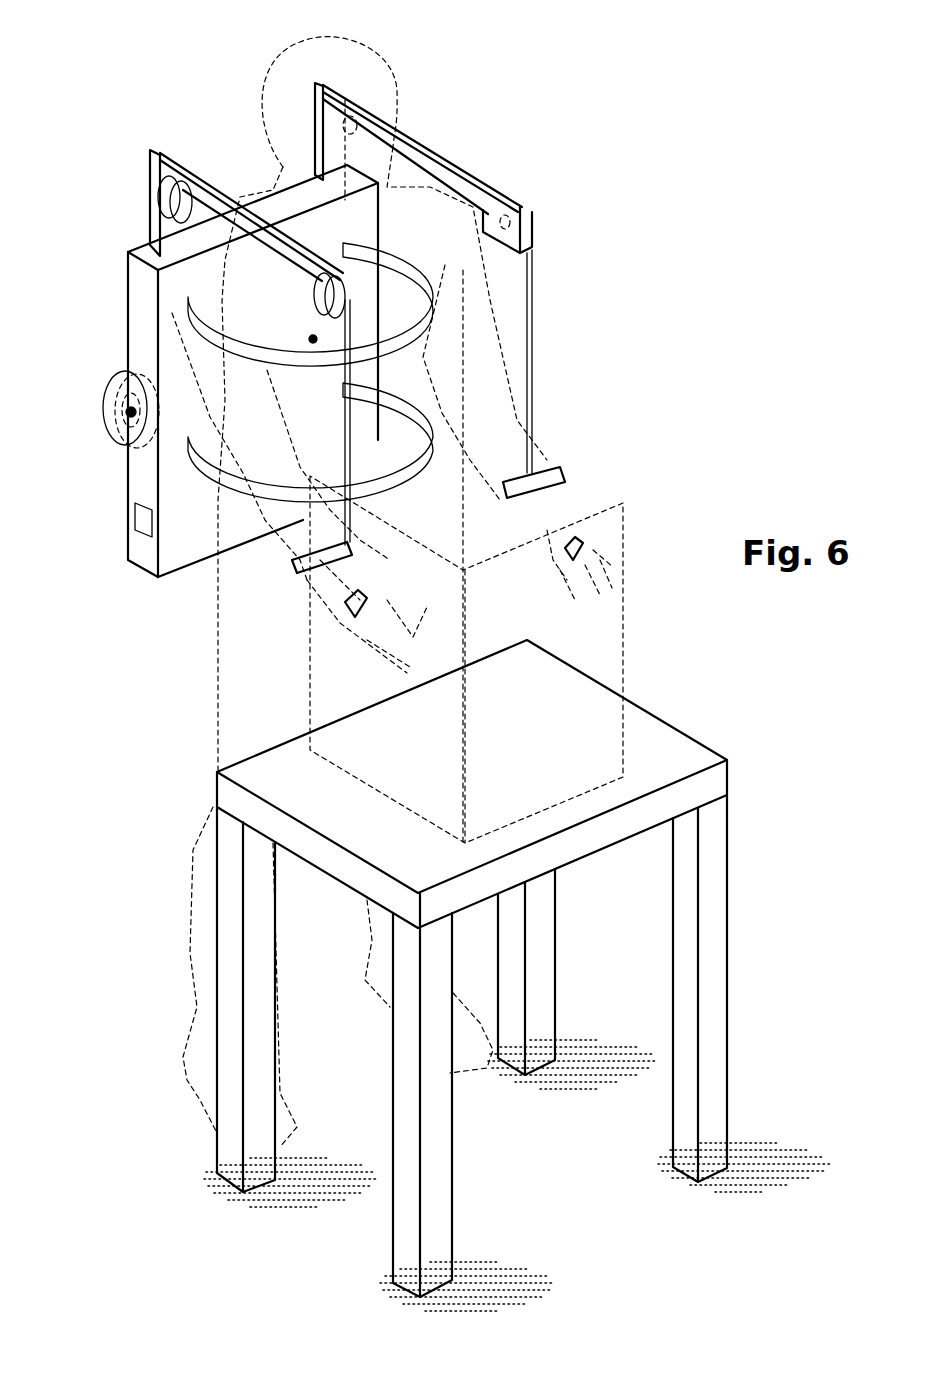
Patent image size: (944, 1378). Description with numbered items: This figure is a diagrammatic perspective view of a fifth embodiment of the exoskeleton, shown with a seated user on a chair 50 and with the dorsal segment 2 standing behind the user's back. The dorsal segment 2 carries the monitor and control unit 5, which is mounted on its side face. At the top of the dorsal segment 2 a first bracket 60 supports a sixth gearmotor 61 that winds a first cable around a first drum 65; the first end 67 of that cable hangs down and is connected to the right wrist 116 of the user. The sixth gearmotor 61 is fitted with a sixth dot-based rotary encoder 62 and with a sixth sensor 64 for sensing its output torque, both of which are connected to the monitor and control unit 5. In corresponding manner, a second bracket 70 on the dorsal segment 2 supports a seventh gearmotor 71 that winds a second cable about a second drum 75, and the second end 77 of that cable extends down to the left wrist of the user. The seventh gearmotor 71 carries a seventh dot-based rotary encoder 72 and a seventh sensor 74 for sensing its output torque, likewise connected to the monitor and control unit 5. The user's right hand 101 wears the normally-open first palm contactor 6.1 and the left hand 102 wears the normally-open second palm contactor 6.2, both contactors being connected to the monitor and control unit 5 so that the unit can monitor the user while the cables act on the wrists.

The dorsal segment 2 is at (130, 295).
The monitor and control unit 5 is at (135, 517).
The chair 50 is at (618, 657).
The first bracket 60 is at (233, 187).
The sixth gearmotor 61 is at (117, 388).
The sixth dot-based rotary encoder 62 is at (128, 408).
The sixth sensor 64 is at (137, 447).
The first drum 65 is at (117, 425).
The first end 67 is at (347, 420).
The second bracket 70 is at (470, 162).
The seventh gearmotor 71 is at (310, 338).
The seventh dot-based rotary encoder 72 is at (408, 306).
The seventh sensor 74 is at (315, 366).
The second drum 75 is at (440, 343).
The second end 77 is at (535, 370).
The right hand 101 is at (330, 600).
The left hand 102 is at (567, 493).
The right wrist 116 is at (333, 596).
The first palm contactor 6.1 is at (340, 635).
The second palm contactor 6.2 is at (585, 548).